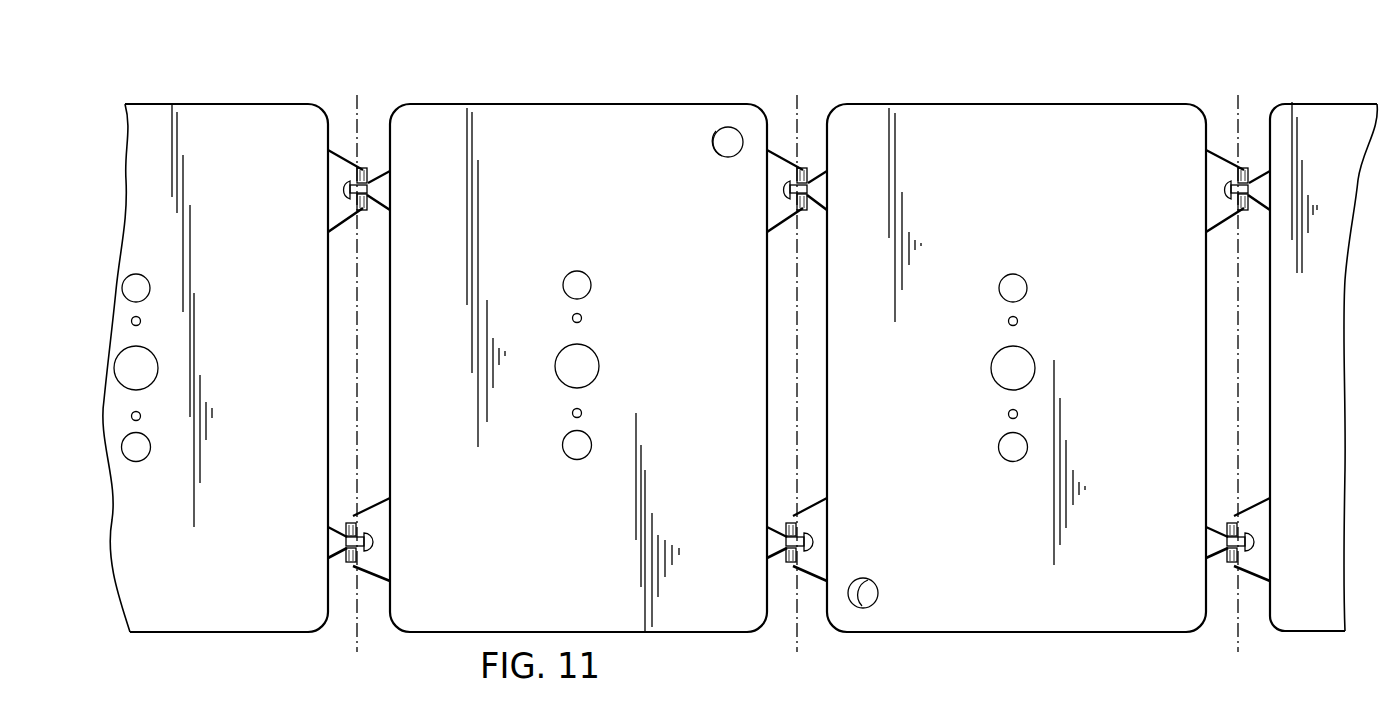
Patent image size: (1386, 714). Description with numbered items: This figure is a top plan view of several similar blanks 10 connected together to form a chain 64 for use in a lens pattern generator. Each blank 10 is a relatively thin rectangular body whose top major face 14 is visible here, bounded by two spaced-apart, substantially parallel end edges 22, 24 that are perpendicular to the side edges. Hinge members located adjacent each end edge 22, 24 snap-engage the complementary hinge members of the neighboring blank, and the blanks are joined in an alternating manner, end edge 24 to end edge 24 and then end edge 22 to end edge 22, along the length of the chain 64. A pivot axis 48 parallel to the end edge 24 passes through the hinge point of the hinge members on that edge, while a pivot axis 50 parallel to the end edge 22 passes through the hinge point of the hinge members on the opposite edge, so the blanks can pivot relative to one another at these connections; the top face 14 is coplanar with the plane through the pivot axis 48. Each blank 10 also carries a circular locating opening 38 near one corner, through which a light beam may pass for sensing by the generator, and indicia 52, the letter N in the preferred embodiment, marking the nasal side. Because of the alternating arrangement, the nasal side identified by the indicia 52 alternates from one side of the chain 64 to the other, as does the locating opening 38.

The blank 10 is at (246, 94).
The top major face 14 is at (245, 580).
The end edge 22 is at (326, 336).
The end edge 24 is at (766, 407).
The locating opening 38 is at (714, 142).
The pivot axis 48 is at (793, 618).
The pivot axis 50 is at (355, 618).
The indicia 52 is at (97, 463).
The chain 64 is at (839, 68).